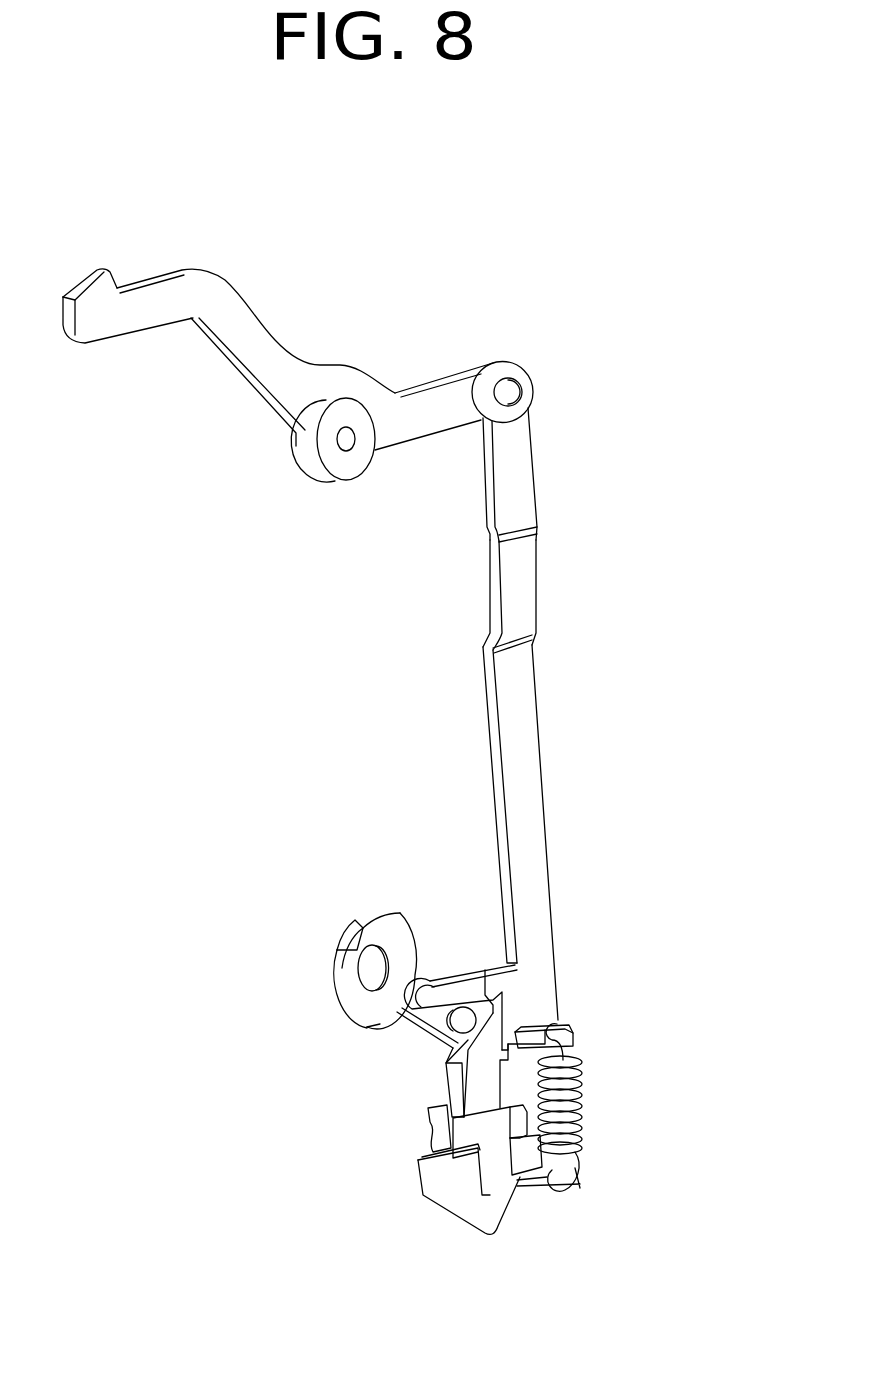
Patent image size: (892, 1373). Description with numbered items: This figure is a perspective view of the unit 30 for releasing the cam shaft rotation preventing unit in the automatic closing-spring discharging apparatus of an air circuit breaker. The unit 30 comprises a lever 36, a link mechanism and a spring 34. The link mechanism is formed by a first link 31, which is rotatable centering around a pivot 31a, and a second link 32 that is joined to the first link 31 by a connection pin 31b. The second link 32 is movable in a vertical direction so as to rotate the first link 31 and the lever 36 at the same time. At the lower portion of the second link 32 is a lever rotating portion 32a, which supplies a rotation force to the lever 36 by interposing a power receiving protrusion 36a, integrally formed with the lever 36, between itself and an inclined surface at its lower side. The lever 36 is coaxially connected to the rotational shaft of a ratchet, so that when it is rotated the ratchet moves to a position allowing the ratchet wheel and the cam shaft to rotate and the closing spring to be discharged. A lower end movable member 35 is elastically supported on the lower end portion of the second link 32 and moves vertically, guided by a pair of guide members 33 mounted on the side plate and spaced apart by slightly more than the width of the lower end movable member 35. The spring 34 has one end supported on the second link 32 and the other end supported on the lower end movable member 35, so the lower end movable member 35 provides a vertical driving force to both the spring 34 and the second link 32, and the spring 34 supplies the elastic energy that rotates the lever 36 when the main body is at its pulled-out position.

The unit for releasing the cam shaft rotation preventing unit 30 is at (405, 252).
The first link 31 is at (238, 333).
The pivot 31a is at (343, 457).
The connection pin 31b is at (513, 392).
The second link 32 is at (527, 730).
The lever rotating portion 32a is at (450, 990).
The guide members 33 is at (478, 1150).
The spring 34 is at (577, 1073).
The lower end movable member 35 is at (448, 1193).
The lever 36 is at (345, 977).
The power receiving protrusion 36a is at (450, 1023).